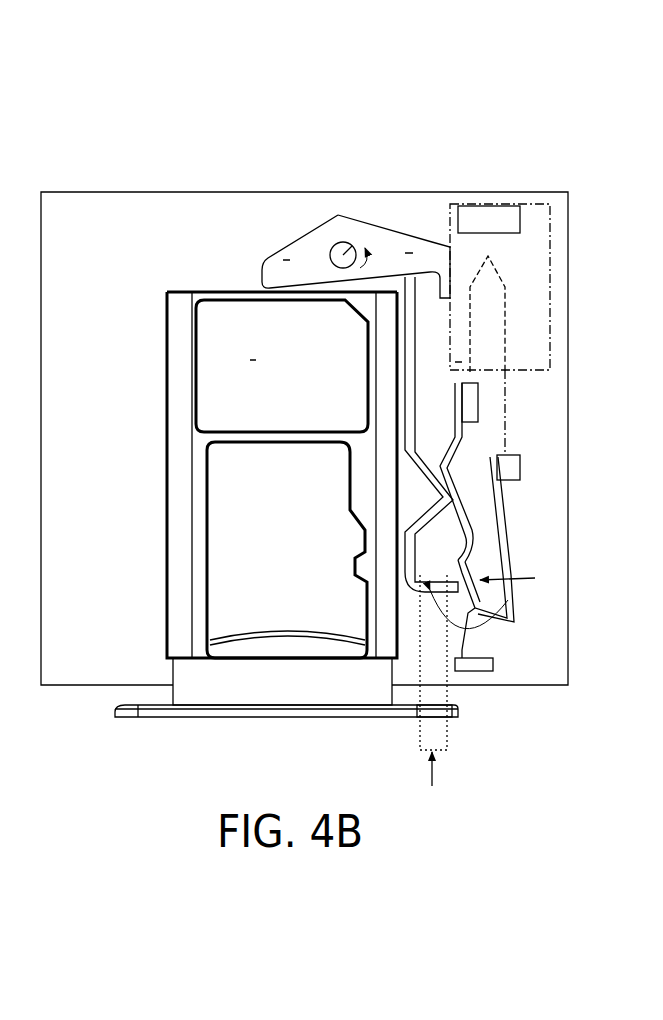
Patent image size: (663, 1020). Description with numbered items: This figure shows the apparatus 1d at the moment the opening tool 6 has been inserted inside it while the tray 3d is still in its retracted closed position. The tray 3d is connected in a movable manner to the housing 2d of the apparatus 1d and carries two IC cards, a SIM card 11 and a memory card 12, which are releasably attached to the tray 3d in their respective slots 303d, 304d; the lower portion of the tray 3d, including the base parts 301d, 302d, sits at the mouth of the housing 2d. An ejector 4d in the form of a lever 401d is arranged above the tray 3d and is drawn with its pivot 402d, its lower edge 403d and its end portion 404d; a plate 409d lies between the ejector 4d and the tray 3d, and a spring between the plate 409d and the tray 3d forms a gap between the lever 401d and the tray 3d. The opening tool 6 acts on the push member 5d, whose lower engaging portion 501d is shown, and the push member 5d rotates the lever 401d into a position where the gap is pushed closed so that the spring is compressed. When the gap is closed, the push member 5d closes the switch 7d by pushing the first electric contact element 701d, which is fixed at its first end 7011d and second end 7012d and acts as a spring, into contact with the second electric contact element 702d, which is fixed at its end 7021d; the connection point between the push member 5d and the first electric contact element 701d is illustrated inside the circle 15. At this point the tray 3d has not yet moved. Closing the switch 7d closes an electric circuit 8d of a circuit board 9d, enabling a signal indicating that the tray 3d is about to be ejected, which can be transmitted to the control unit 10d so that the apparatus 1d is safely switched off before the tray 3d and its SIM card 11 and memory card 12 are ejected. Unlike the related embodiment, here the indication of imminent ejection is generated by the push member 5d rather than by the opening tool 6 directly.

The apparatus 1d is at (226, 76).
The housing 2d is at (568, 192).
The tray 3d is at (226, 454).
The base plate 301d is at (132, 703).
The base plate end portion 302d is at (458, 707).
The upper card slot wall 303d is at (212, 302).
The lower card slot wall 304d is at (207, 607).
The ejector 4d is at (313, 238).
The lever 401d is at (260, 260).
The lever pivot 402d is at (352, 247).
The lever lower edge 403d is at (262, 272).
The lever engaging hook 404d is at (432, 242).
The plate 409d is at (152, 291).
The push member 5d is at (412, 326).
The slider engaging portion 501d is at (505, 621).
The opening tool 6 is at (435, 734).
The switch 7d is at (546, 524).
The first electric contact element 701d is at (450, 441).
The first link arm end 7011d is at (480, 384).
The second electric contact element 702d is at (500, 545).
The second link arm pivot 7021d is at (520, 462).
The link arm lower end 7012d is at (493, 663).
The ejection direction indicator 8d is at (505, 330).
The I/O unit 9d is at (453, 205).
The control unit 10d is at (508, 258).
The SIM card 11 is at (255, 352).
The memory card 12 is at (250, 497).
The circle 15 is at (524, 579).